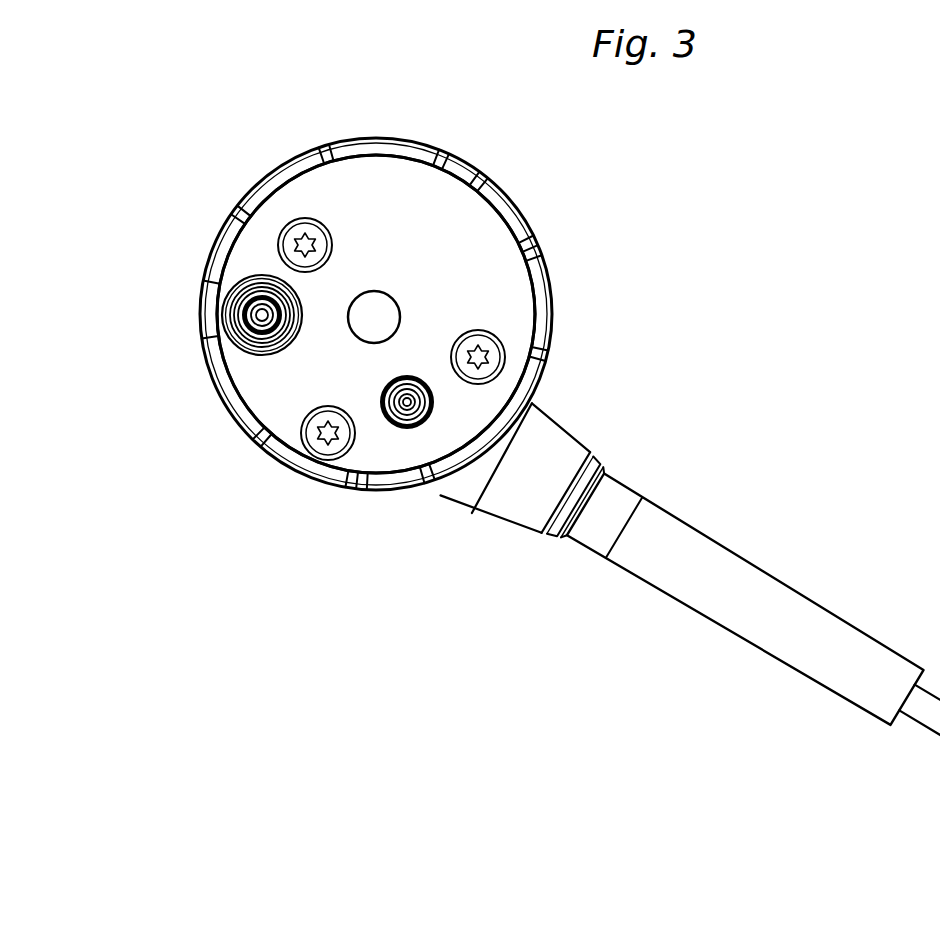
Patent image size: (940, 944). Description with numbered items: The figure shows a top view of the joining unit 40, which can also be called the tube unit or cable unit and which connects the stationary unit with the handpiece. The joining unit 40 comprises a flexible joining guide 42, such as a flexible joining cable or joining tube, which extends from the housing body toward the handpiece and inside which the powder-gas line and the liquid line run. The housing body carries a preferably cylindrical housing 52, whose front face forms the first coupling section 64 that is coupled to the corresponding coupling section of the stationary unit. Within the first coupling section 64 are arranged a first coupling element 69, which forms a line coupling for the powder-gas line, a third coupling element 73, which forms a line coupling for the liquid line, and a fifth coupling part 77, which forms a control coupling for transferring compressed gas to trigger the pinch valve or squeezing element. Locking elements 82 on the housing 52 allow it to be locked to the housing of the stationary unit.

The joining unit 40 is at (178, 182).
The flexible joining guide 42 is at (812, 605).
The housing 52 is at (412, 137).
The first coupling section 64 is at (434, 263).
The first coupling element 69 is at (262, 316).
The third coupling element 73 is at (385, 314).
The fifth coupling part 77 is at (410, 405).
The locking elements 82 is at (478, 180).